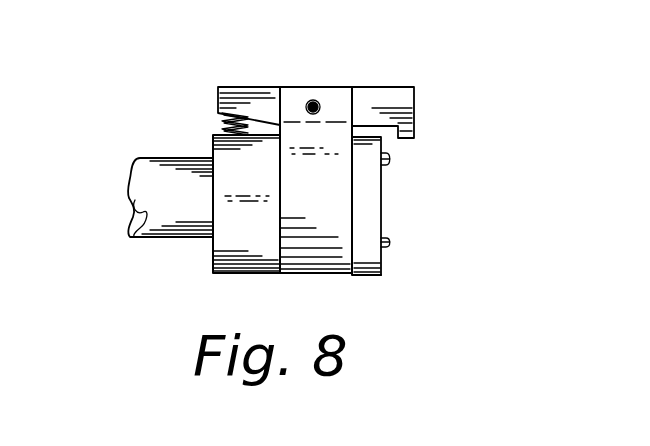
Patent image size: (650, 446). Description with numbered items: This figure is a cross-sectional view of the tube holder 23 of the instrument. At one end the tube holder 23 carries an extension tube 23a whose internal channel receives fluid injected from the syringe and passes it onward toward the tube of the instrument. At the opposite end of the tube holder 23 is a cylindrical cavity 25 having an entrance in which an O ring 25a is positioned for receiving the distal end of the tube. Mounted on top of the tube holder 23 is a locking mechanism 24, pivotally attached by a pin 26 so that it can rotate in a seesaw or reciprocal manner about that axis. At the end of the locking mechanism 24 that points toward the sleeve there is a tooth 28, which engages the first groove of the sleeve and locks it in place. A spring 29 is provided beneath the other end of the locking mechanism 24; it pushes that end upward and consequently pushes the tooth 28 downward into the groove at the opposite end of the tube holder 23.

The tube holder 23 is at (357, 80).
The extension tube 23a is at (128, 210).
The locking mechanism 24 is at (255, 87).
The cylindrical cavity 25 is at (392, 213).
The O ring 25a is at (390, 243).
The pin 26 is at (313, 100).
The tooth 28 is at (413, 140).
The spring 29 is at (218, 121).